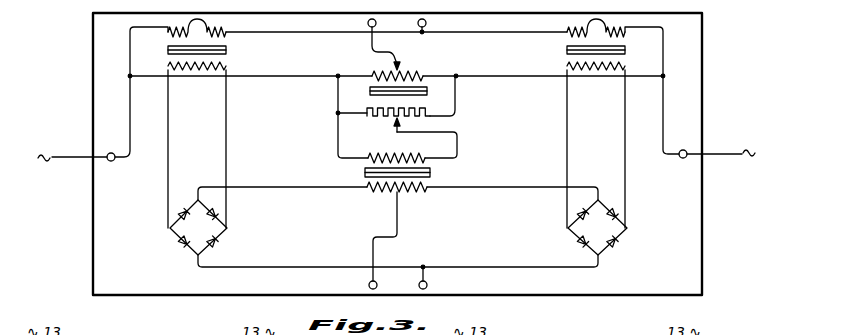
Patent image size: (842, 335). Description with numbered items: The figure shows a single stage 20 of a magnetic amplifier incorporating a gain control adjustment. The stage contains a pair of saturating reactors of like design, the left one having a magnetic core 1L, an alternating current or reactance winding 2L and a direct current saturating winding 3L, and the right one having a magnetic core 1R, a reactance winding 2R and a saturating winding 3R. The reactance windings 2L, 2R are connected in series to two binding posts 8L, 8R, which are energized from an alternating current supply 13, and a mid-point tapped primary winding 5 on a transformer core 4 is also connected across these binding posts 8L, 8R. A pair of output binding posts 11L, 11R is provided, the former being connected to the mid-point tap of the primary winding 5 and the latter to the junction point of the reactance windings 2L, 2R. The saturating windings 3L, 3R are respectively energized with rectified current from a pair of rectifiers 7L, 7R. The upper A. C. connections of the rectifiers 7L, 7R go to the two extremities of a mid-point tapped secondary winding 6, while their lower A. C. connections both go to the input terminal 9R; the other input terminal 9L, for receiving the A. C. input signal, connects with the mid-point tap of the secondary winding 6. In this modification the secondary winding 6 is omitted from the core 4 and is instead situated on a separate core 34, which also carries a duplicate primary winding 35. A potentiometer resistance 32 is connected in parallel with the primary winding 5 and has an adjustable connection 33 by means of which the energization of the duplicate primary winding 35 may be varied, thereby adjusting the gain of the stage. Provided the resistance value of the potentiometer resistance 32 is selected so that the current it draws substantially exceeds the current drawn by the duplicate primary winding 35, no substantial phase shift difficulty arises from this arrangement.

The magnetic core 1L is at (184, 52).
The magnetic core 1R is at (609, 51).
The reactance winding 2L is at (199, 26).
The reactance winding 2R is at (591, 26).
The direct current saturating winding 3L is at (209, 70).
The direct current saturating winding 3R is at (581, 70).
The transformer core 4 is at (406, 92).
The primary winding 5 is at (397, 66).
The secondary winding 6 is at (397, 197).
The rectifier 7L is at (207, 228).
The rectifier 7R is at (584, 228).
The binding post 8L is at (85, 168).
The binding post 8R is at (707, 165).
The input terminal 9L is at (356, 285).
The input terminal 9R is at (437, 285).
The output binding post 11L is at (368, 44).
The output binding post 11R is at (440, 26).
The alternating current supply 13 is at (399, 147).
The circuit unit 20 is at (752, 35).
The potentiometer resistance 32 is at (388, 123).
The adjustable connection 33 is at (399, 128).
The separate core 34 is at (410, 175).
The duplicate primary winding 35 is at (396, 149).